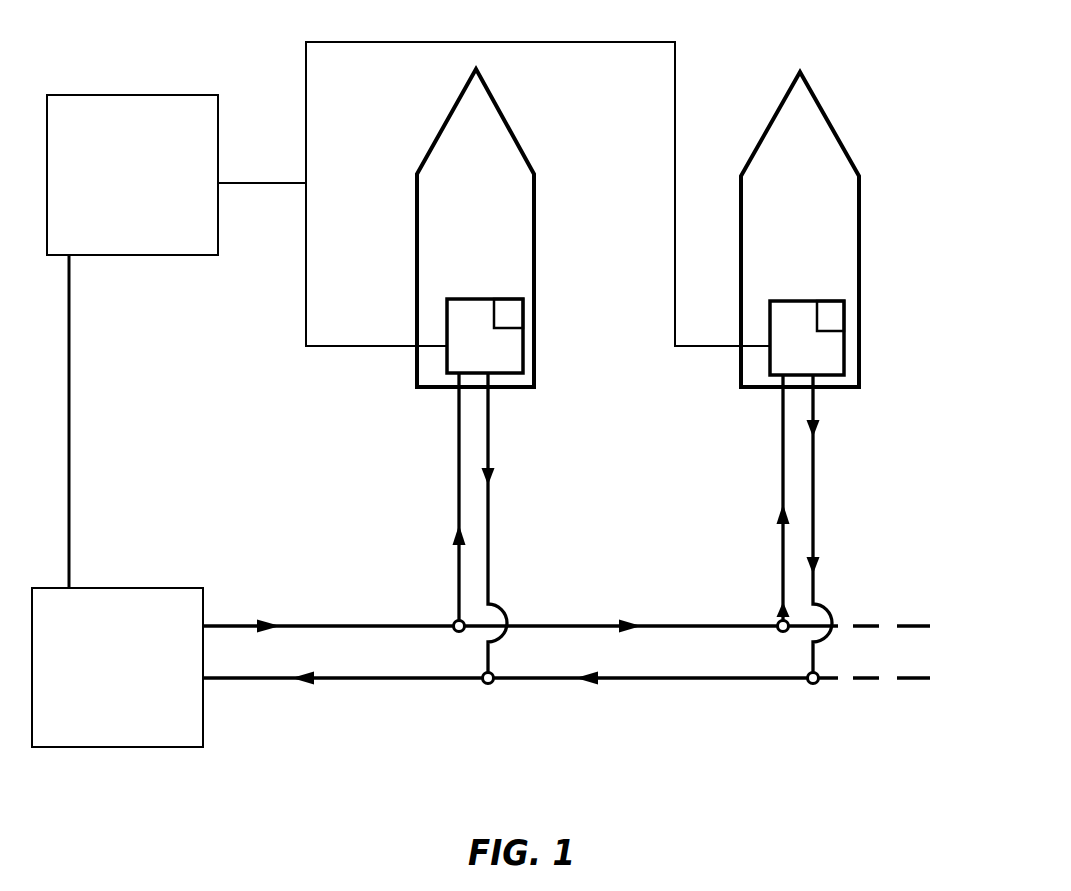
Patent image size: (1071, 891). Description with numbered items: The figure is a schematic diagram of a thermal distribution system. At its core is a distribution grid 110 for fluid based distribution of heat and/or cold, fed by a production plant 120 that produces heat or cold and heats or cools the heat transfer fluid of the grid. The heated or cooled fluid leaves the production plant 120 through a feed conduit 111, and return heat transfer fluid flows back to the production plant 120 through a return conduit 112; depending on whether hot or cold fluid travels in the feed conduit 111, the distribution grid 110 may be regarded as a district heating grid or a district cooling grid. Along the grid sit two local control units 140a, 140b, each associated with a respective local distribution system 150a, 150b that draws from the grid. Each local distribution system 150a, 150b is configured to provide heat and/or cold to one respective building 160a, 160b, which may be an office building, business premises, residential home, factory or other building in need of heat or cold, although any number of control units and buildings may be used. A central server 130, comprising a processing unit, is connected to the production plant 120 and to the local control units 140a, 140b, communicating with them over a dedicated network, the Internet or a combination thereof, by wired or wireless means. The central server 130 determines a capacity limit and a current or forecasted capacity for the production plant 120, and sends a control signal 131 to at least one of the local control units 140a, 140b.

The distribution grid 110 is at (841, 712).
The feed conduit 111 is at (230, 625).
The return conduit 112 is at (287, 685).
The production plant 120 is at (145, 733).
The central server 130 is at (192, 122).
The control signal 131 is at (260, 182).
The local control unit 140a is at (508, 318).
The local control unit 140b is at (830, 318).
The local distribution system 150a is at (485, 334).
The local distribution system 150b is at (840, 358).
The building 160a is at (510, 118).
The building 160b is at (827, 112).